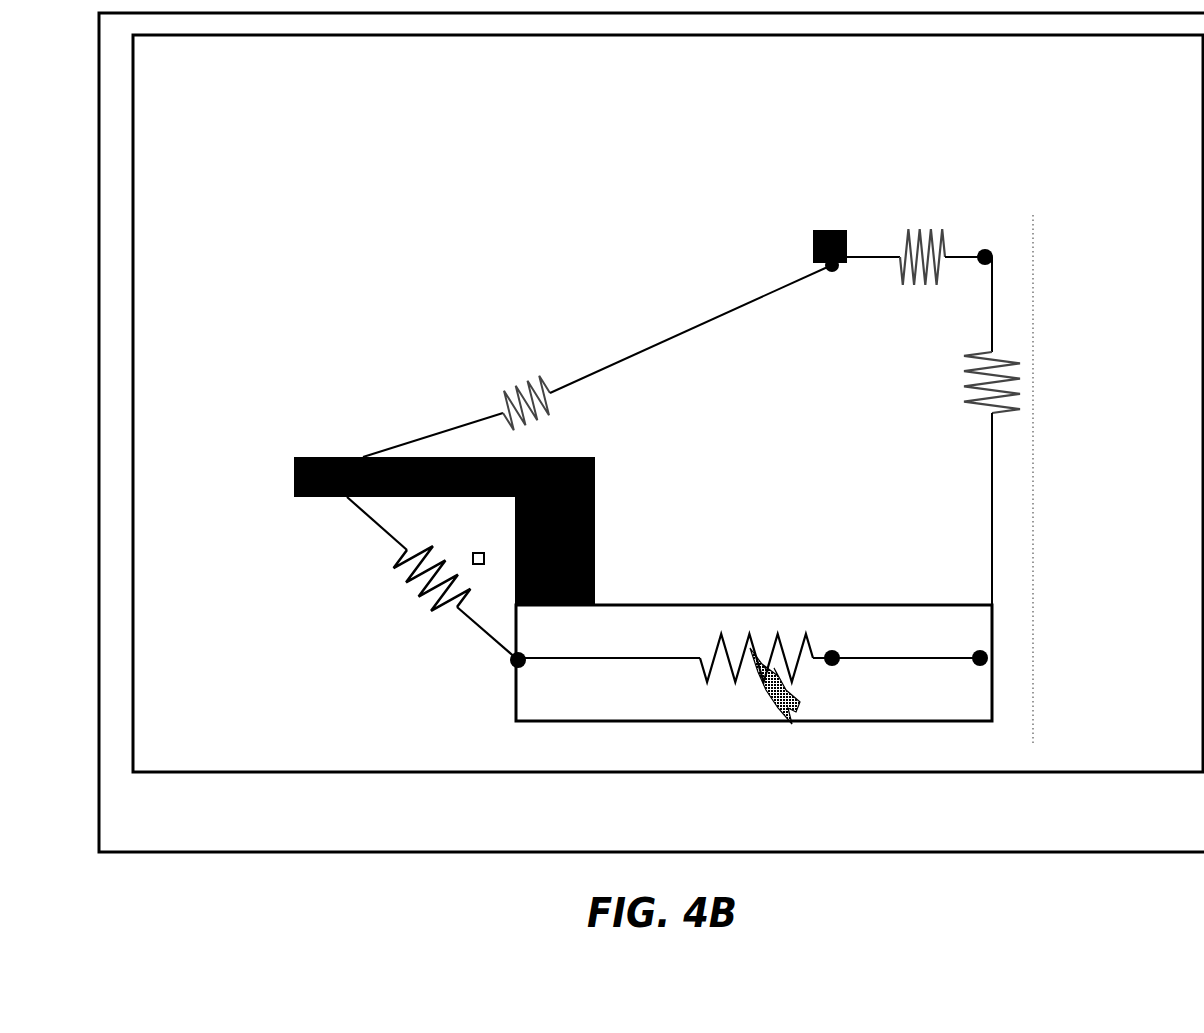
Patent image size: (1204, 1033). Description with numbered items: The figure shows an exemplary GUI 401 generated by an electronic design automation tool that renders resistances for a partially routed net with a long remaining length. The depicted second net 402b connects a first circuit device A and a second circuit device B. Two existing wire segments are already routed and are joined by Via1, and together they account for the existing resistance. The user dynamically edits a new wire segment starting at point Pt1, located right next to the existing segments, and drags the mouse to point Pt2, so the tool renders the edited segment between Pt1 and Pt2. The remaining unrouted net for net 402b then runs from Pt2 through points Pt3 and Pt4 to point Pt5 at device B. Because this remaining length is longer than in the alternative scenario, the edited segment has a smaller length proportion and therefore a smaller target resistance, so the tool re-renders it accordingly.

The GUI 401 is at (668, 403).
The second net 402b is at (478, 210).
The via Via1 is at (557, 460).
The point 1 Pt1 is at (494, 671).
The point 2 Pt2 is at (845, 673).
The point 3 Pt3 is at (1000, 673).
The point 4 Pt4 is at (995, 241).
The point 5 Pt5 is at (861, 266).